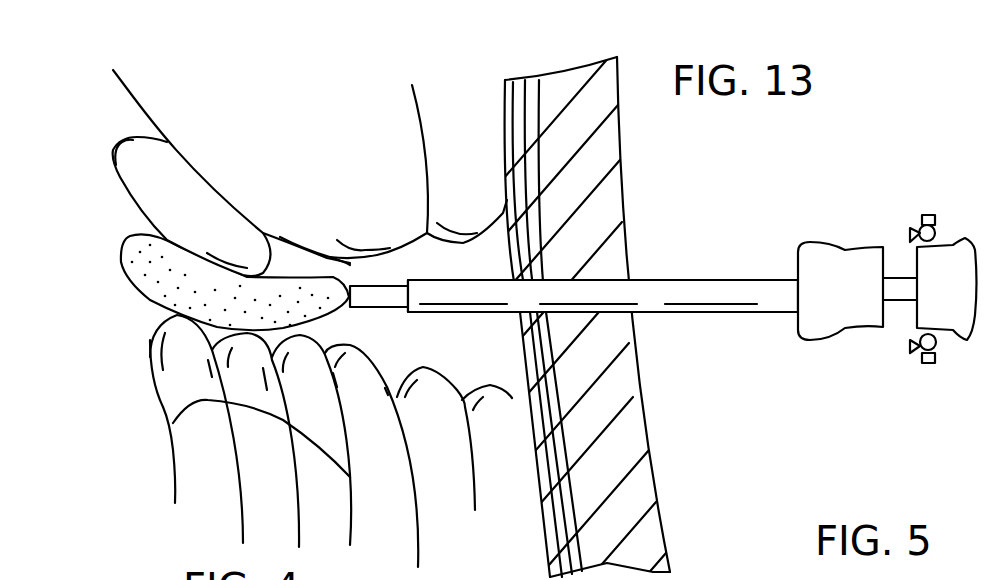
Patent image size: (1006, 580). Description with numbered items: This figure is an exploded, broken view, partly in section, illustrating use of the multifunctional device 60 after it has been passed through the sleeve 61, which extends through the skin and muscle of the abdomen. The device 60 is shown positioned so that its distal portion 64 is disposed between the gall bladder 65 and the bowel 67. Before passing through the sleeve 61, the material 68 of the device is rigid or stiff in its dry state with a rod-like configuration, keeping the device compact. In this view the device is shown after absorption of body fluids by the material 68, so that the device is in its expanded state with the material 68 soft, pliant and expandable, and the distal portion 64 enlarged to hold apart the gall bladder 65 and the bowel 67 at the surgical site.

The multifunctional device 60 is at (663, 279).
The sleeve 61 is at (703, 312).
The distal portion 64 is at (143, 300).
The gall bladder 65 is at (182, 190).
The bowel 67 is at (172, 423).
The material 68 is at (281, 283).